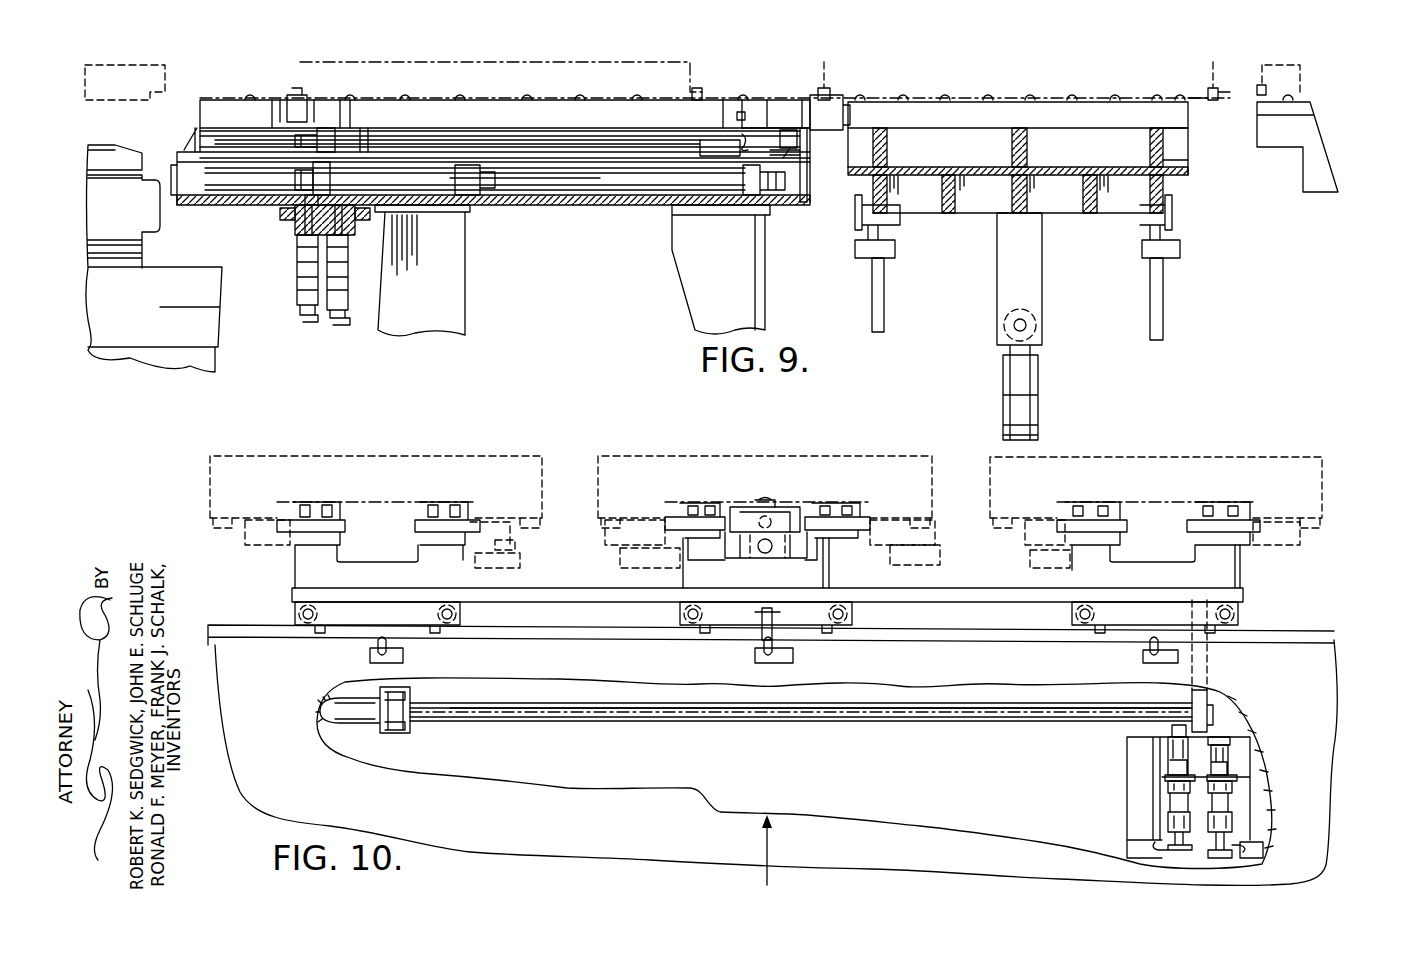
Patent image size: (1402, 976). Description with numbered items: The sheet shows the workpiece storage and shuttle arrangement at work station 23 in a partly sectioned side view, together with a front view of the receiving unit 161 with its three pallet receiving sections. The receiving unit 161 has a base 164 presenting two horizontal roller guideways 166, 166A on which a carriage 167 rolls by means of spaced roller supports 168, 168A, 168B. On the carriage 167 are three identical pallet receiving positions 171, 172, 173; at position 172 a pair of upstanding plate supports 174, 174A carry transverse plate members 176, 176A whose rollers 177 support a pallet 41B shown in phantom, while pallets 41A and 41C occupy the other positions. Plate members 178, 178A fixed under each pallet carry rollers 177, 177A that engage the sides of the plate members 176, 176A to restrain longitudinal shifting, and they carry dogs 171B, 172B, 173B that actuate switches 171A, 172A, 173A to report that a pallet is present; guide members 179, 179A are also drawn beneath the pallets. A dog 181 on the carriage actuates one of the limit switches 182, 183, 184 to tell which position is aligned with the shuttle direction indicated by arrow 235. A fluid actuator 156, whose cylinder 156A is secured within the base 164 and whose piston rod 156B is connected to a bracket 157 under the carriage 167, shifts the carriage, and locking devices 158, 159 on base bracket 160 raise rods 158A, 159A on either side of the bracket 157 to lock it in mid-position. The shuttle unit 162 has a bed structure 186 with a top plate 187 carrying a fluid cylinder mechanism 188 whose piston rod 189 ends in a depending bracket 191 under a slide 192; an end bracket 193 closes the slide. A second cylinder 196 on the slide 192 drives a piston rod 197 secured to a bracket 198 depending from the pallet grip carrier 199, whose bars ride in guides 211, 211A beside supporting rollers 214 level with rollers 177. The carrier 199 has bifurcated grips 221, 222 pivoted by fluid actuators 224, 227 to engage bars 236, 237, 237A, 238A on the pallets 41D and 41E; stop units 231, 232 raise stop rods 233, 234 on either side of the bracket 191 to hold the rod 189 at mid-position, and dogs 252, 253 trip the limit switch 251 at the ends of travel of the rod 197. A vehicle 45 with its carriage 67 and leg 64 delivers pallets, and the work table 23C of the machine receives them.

In FIG. 9, the work station 23 is at (232, 304).
In FIG. 9, the work table 23C is at (118, 148).
In FIG. 10, the pallet 41A is at (1110, 462).
In FIG. 9, the pallet 41B is at (1060, 68).
In FIG. 10, the pallet 41B is at (712, 462).
In FIG. 10, the pallet 41C is at (415, 458).
In FIG. 9, the pallet 41D is at (498, 64).
In FIG. 9, the pallet 41E is at (1302, 70).
In FIG. 9, the vehicle 45 is at (1302, 202).
In FIG. 9, the bracket leg 64 is at (1322, 190).
In FIG. 9, the carriage 67 is at (1287, 148).
In FIG. 10, the fluid actuator 156 is at (440, 733).
In FIG. 10, the cylinder 156A is at (337, 717).
In FIG. 10, the piston rod 156B is at (717, 717).
In FIG. 10, the bracket 157 is at (1203, 698).
In FIG. 10, the locking device 158 is at (1167, 799).
In FIG. 10, the rod 158A is at (1172, 729).
In FIG. 10, the locking device 159 is at (1240, 800).
In FIG. 10, the rod 159A is at (1228, 740).
In FIG. 10, the base bracket 160 is at (1135, 771).
In FIG. 9, the receiving unit 161 is at (1185, 177).
In FIG. 10, the receiving unit 161 is at (613, 443).
In FIG. 9, the shuttle unit 162 is at (608, 204).
In FIG. 9, the base 164 is at (1162, 322).
In FIG. 10, the base 164 is at (487, 833).
In FIG. 9, the roller guideway 166 is at (1160, 250).
In FIG. 10, the roller guideway 166 is at (260, 627).
In FIG. 9, the roller guideway 166A is at (872, 248).
In FIG. 9, the carriage 167 is at (1190, 170).
In FIG. 10, the carriage 167 is at (1245, 572).
In FIG. 10, the roller support 168 is at (348, 613).
In FIG. 9, the roller support 168A is at (1068, 208).
In FIG. 10, the roller support 168A is at (740, 612).
In FIG. 10, the roller support 168B is at (1128, 612).
In FIG. 10, the pallet receiving position 171 is at (506, 457).
In FIG. 10, the switch 171A is at (505, 560).
In FIG. 10, the dog 171B is at (508, 546).
In FIG. 10, the pallet receiving position 172 is at (836, 457).
In FIG. 10, the switch 172A is at (650, 555).
In FIG. 10, the dog 172B is at (668, 557).
In FIG. 10, the pallet receiving position 173 is at (1221, 457).
In FIG. 10, the switch 173A is at (1035, 560).
In FIG. 10, the dog 173B is at (1062, 555).
In FIG. 10, the upstanding plate support 174 is at (698, 548).
In FIG. 9, the upstanding plate support 174A is at (1180, 136).
In FIG. 10, the upstanding plate support 174A is at (820, 553).
In FIG. 10, the plate member 176 is at (690, 527).
In FIG. 9, the plate member 176A is at (1060, 118).
In FIG. 10, the plate member 176A is at (823, 528).
In FIG. 9, the roller 177 is at (948, 98).
In FIG. 10, the roller 177 is at (858, 508).
In FIG. 10, the roller 177A is at (705, 510).
In FIG. 10, the plate member 178 is at (650, 520).
In FIG. 10, the plate member 178A is at (905, 538).
In FIG. 10, the guide pin 179 is at (660, 535).
In FIG. 10, the guide pin 179A is at (870, 535).
In FIG. 10, the dog 181 is at (762, 632).
In FIG. 10, the limit switch 182 is at (405, 655).
In FIG. 10, the limit switch 183 is at (797, 657).
In FIG. 10, the limit switch 184 is at (1147, 658).
In FIG. 9, the bed structure 186 is at (448, 318).
In FIG. 9, the top horizontal plate 187 is at (532, 206).
In FIG. 9, the fluid cylinder mechanism 188 is at (678, 177).
In FIG. 9, the piston rod 189 is at (442, 182).
In FIG. 9, the depending bracket 191 is at (318, 173).
In FIG. 9, the slide 192 is at (318, 156).
In FIG. 9, the end bracket 193 is at (198, 157).
In FIG. 9, the cylinder 196 is at (562, 136).
In FIG. 10, the cylinder 196 is at (748, 548).
In FIG. 9, the piston rod 197 is at (783, 150).
In FIG. 9, the bracket 198 is at (805, 137).
In FIG. 10, the bracket 198 is at (780, 547).
In FIG. 9, the pallet grip carrier 199 is at (742, 100).
In FIG. 10, the pallet grip carrier 199 is at (792, 508).
In FIG. 10, the guide 211 is at (732, 512).
In FIG. 10, the guide 211A is at (808, 512).
In FIG. 9, the supporting roller 214 is at (587, 97).
In FIG. 9, the bifurcated grip 221 is at (295, 95).
In FIG. 9, the bifurcated grip 222 is at (820, 104).
In FIG. 10, the bifurcated grip 222 is at (770, 505).
In FIG. 9, the fluid actuator 224 is at (370, 122).
In FIG. 9, the fluid actuator 227 is at (747, 116).
In FIG. 9, the stop unit 231 is at (302, 248).
In FIG. 9, the stop unit 232 is at (347, 292).
In FIG. 9, the stop rod extension 233 is at (312, 197).
In FIG. 9, the stop rod extension 234 is at (337, 185).
In FIG. 10, the direction arrow 235 is at (770, 853).
In FIG. 9, the bar 236 is at (702, 94).
In FIG. 9, the bar 237 is at (1214, 86).
In FIG. 9, the locating pin 237A is at (826, 86).
In FIG. 9, the bar 238A is at (1262, 84).
In FIG. 9, the limit switch 251 is at (716, 142).
In FIG. 9, the dog 252 is at (337, 132).
In FIG. 9, the dog 253 is at (743, 132).